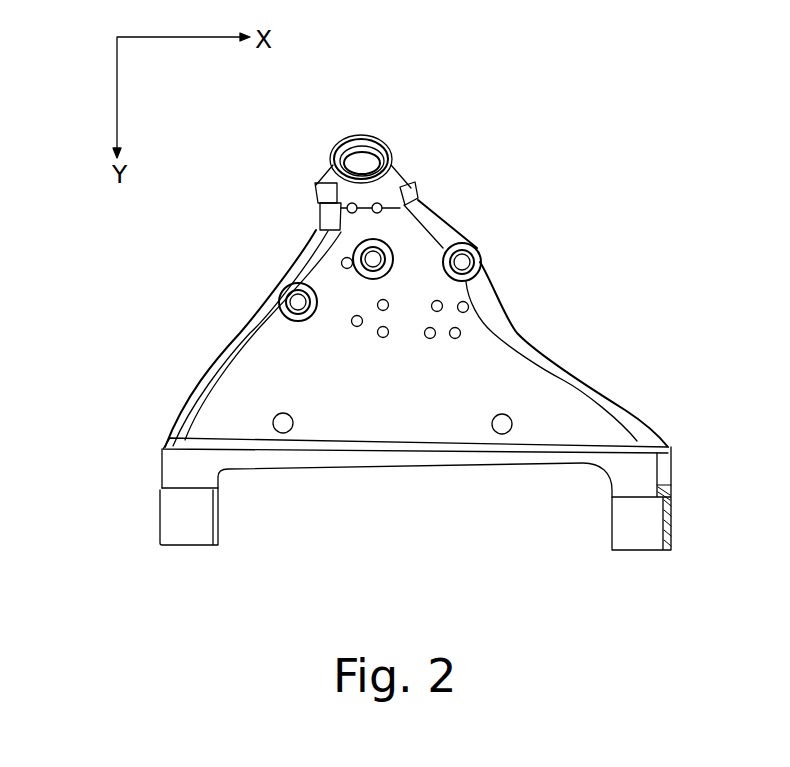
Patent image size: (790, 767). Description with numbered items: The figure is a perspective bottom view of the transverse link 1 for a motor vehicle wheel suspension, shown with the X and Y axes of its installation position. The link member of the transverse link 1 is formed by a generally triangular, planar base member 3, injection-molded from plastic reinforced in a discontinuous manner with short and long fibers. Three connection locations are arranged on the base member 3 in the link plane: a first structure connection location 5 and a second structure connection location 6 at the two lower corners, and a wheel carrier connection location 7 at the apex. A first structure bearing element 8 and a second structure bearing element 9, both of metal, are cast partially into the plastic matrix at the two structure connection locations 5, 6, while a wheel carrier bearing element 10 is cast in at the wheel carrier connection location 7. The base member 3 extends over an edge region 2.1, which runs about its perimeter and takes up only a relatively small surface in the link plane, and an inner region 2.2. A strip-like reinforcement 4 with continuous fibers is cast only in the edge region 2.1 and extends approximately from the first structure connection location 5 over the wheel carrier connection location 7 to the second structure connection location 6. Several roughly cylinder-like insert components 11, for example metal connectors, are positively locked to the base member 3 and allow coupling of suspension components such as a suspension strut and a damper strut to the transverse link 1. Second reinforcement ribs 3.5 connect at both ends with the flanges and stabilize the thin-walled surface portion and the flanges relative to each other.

The transverse link 1 is at (433, 86).
The edge region 2.1 is at (213, 332).
The inner region 2.2 is at (387, 430).
The base member 3 is at (274, 390).
The second reinforcement ribs 3.5 is at (136, 452).
The reinforcement 4 is at (550, 352).
The first structure connection location 5 is at (143, 537).
The second structure connection location 6 is at (648, 573).
The wheel carrier connection location 7 is at (351, 119).
The first structure bearing element 8 is at (183, 528).
The second structure bearing element 9 is at (628, 535).
The wheel carrier bearing element 10 is at (365, 136).
The insert components 11 is at (378, 256).